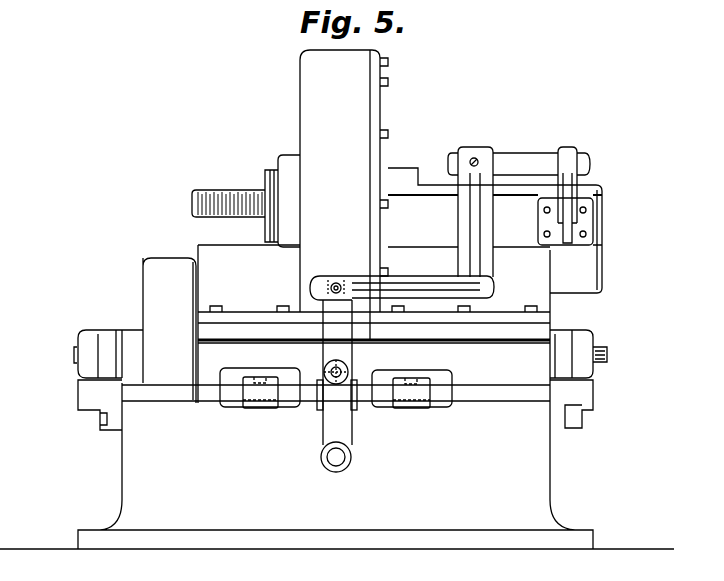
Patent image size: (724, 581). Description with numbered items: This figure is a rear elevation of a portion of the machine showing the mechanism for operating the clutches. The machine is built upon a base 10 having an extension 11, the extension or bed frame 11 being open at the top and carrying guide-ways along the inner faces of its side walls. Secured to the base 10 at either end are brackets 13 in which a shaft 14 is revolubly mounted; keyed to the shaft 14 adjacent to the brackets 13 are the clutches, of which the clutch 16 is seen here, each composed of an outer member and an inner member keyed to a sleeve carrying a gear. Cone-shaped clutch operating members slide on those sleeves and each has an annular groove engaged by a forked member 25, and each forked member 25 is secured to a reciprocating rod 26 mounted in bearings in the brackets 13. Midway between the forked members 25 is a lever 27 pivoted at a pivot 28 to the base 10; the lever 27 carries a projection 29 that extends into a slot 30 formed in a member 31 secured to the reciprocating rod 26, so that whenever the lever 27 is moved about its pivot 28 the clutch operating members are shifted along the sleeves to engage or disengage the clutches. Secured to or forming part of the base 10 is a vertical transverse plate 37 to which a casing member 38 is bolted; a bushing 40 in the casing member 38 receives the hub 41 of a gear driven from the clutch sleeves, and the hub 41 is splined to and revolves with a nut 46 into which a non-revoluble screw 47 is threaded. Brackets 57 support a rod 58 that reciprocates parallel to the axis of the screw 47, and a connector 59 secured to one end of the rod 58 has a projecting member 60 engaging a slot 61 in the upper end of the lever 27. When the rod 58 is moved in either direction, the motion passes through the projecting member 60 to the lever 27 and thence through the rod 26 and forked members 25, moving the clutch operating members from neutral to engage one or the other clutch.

The base 10 is at (540, 483).
The extension 11 is at (602, 265).
The brackets 13 is at (89, 332).
The shaft 14 is at (76, 351).
The clutch 16 is at (168, 255).
The forked member 25 is at (261, 409).
The reciprocating rod 26 is at (490, 394).
The lever 27 is at (325, 431).
The pivot 28 is at (350, 469).
The projection 29 is at (328, 369).
The slot 30 is at (350, 360).
The member 31 is at (351, 411).
The vertical transverse plate 37 is at (381, 109).
The casing member 38 is at (300, 80).
The bushing 40 is at (279, 160).
The hub 41 is at (266, 166).
The nut 46 is at (265, 226).
The screw 47 is at (205, 190).
The brackets 57 is at (586, 220).
The rod 58 is at (512, 158).
The connector 59 is at (487, 268).
The projecting member 60 is at (339, 287).
The slot 61 is at (330, 276).